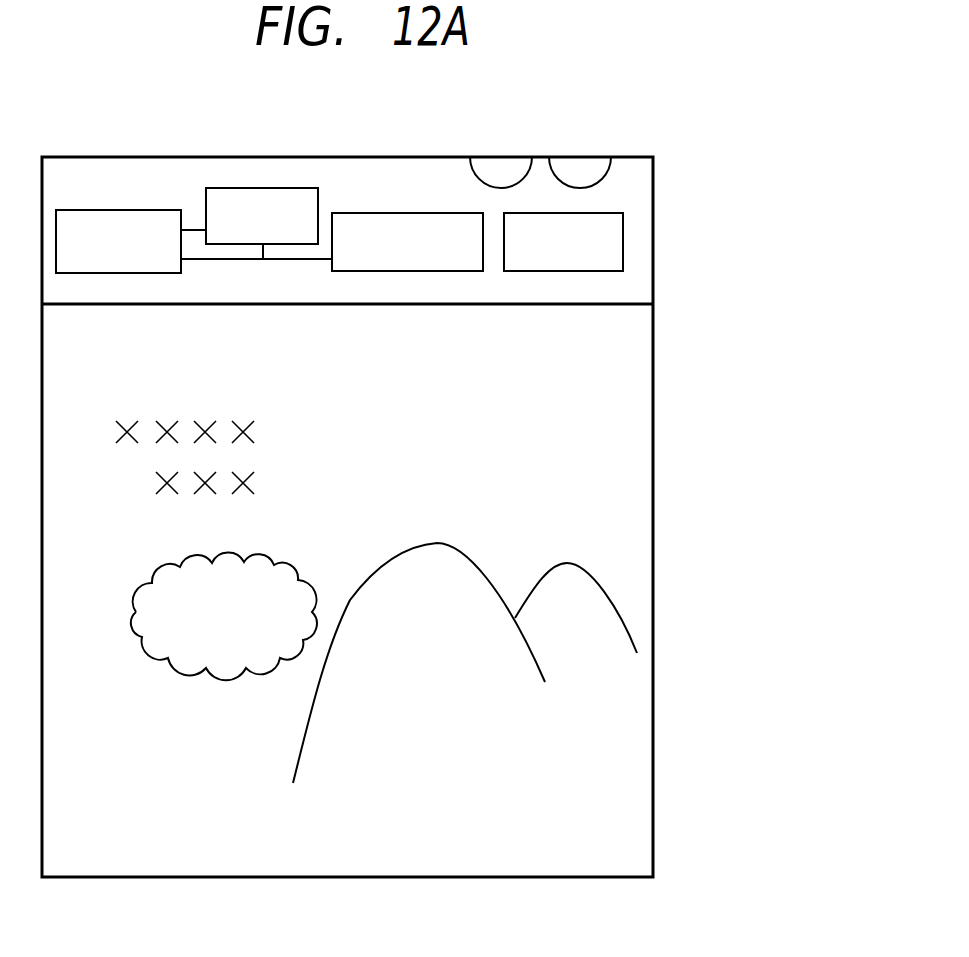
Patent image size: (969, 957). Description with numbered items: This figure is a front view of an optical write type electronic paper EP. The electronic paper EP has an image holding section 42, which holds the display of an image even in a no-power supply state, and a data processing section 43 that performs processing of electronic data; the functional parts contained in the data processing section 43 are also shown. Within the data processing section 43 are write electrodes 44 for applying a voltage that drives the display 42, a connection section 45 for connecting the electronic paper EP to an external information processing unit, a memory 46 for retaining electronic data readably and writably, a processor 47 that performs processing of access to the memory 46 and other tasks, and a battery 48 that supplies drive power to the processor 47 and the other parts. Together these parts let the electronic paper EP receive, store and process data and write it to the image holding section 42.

The electronic paper EP is at (680, 352).
The image holding section 42 is at (653, 438).
The data processing section 43 is at (653, 190).
The write electrodes 44 is at (502, 157).
The connection section 45 is at (131, 210).
The memory 46 is at (267, 188).
The processor 47 is at (408, 213).
The battery 48 is at (563, 272).